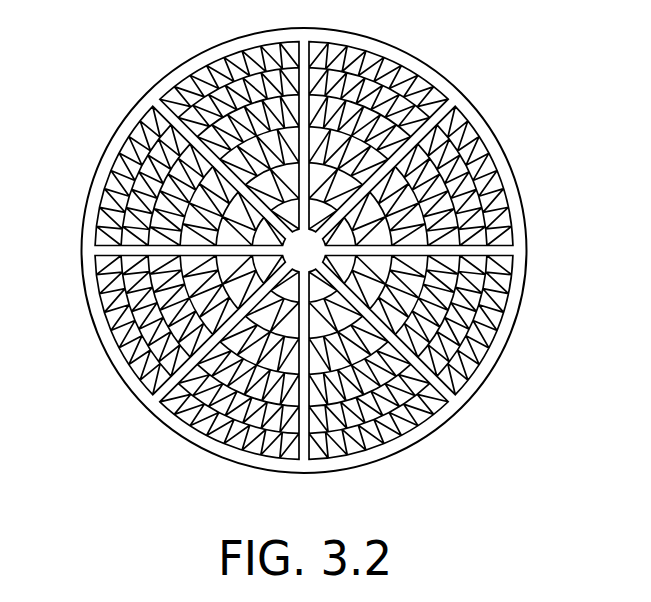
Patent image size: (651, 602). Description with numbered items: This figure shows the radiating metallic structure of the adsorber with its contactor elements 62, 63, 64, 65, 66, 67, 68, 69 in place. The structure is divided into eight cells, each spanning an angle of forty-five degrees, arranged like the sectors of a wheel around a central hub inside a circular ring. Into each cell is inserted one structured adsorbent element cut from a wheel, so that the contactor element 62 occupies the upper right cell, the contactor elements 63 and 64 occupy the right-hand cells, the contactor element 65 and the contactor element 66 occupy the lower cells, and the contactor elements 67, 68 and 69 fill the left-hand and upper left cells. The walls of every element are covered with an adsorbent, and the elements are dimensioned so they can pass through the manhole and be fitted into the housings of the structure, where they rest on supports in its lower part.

The contactor element 62 is at (410, 95).
The contactor element 63 is at (490, 203).
The contactor element 64 is at (480, 318).
The contactor element 65 is at (408, 403).
The contactor element 66 is at (200, 403).
The contactor element 67 is at (110, 318).
The contactor element 68 is at (110, 203).
The contactor element 69 is at (205, 100).